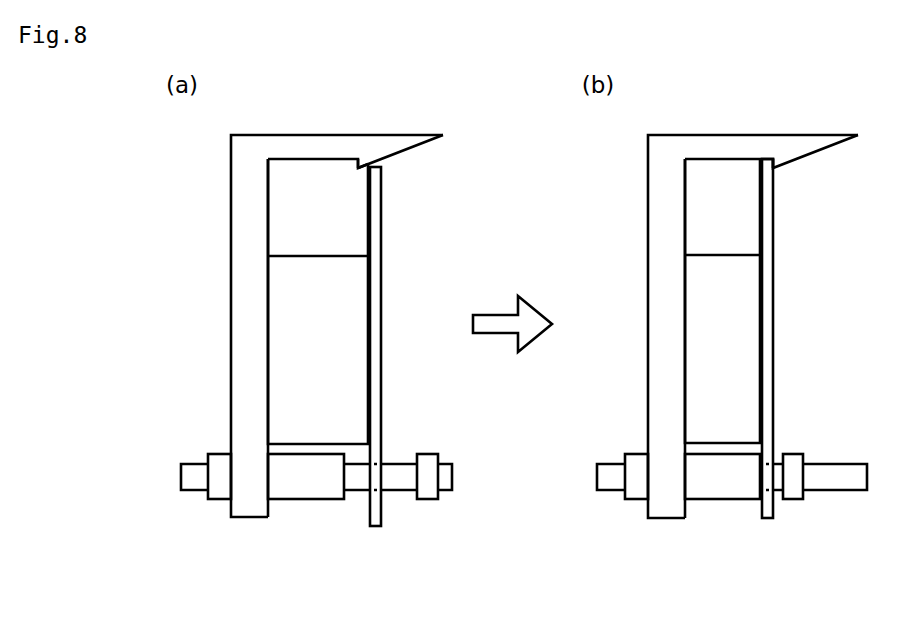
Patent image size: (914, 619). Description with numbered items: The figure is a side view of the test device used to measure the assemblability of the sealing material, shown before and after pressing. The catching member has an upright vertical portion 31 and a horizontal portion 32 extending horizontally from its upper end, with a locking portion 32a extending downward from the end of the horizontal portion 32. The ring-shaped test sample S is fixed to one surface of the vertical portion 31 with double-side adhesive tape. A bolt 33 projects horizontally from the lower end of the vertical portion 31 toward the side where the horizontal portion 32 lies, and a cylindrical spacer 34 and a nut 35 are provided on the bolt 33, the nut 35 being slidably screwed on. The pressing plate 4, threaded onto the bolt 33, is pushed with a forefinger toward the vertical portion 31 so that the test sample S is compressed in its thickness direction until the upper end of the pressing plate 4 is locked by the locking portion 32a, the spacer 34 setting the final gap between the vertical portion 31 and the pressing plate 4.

The vertical portion 31 is at (248, 323).
The horizontal portion 32 is at (295, 142).
The locking portion 32a is at (357, 167).
The pressing plate 4 is at (377, 267).
The test sample S is at (303, 360).
The bolt 33 is at (400, 482).
The cylindrical spacer 34 is at (299, 473).
The nut 35 is at (220, 490).